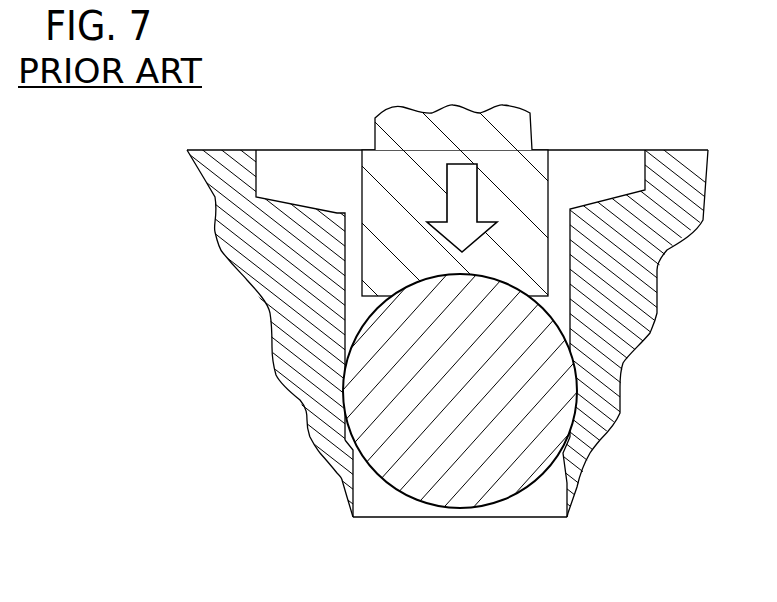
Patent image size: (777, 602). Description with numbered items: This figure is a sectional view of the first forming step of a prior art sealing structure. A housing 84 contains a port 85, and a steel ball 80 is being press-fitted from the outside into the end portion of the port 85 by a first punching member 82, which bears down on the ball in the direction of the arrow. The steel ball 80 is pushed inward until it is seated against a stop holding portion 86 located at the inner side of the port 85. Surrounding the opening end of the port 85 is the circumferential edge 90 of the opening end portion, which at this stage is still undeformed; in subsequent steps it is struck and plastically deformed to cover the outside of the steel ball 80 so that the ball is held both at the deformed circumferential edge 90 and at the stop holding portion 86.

The steel ball 80 is at (490, 487).
The first punching member 82 is at (530, 185).
The housing 84 is at (242, 170).
The port 85 is at (570, 488).
The stop holding portion 86 is at (345, 440).
The circumferential edge of the opening end portion 90 is at (328, 212).